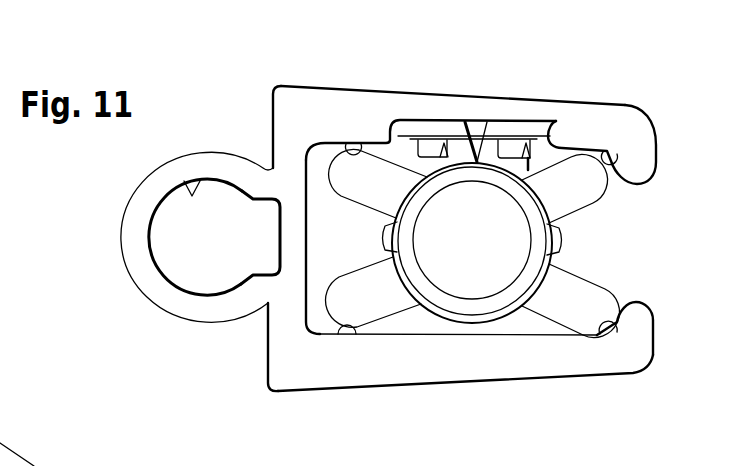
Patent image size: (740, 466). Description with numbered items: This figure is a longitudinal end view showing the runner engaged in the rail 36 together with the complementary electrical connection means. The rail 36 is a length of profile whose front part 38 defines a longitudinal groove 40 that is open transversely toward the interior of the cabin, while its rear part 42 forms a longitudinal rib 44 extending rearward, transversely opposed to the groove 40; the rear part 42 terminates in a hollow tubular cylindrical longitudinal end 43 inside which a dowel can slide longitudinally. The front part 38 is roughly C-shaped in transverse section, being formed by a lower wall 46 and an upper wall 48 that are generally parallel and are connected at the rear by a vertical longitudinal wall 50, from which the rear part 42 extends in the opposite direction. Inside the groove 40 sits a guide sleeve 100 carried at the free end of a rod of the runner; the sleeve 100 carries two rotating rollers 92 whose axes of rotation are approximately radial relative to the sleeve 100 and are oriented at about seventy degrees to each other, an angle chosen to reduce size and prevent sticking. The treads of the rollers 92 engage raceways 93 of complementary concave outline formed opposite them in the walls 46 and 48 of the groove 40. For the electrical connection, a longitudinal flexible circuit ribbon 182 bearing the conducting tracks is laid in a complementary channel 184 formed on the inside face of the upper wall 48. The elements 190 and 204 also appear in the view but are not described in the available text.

The rail 36 is at (622, 92).
The front part 38 is at (644, 371).
The longitudinal groove 40 is at (602, 237).
The rear part 42 is at (193, 303).
The hollow tubular cylindrical longitudinal end 43 is at (197, 181).
The longitudinal rib 44 is at (133, 184).
The lower wall 46 is at (413, 353).
The upper wall 48 is at (320, 108).
The vertical longitudinal wall 50 is at (293, 234).
The rollers 92 is at (600, 182).
The raceways 93 is at (362, 150).
The guide sleeve 100 is at (563, 243).
The longitudinal flexible circuit ribbon 182 is at (561, 131).
The channel 184 is at (477, 162).
The retaining feet 190 is at (433, 146).
The adjacent element 204 is at (13, 462).